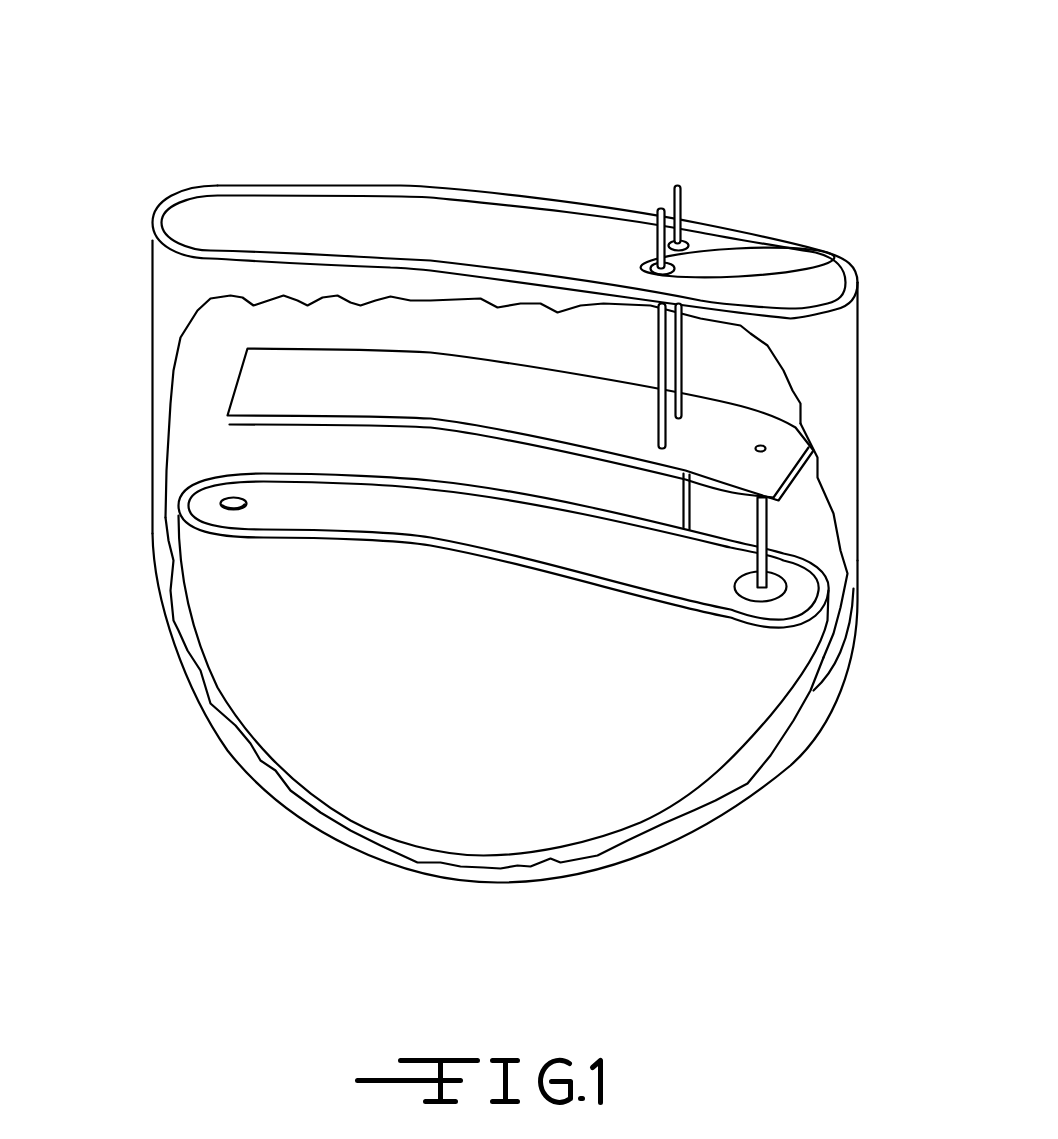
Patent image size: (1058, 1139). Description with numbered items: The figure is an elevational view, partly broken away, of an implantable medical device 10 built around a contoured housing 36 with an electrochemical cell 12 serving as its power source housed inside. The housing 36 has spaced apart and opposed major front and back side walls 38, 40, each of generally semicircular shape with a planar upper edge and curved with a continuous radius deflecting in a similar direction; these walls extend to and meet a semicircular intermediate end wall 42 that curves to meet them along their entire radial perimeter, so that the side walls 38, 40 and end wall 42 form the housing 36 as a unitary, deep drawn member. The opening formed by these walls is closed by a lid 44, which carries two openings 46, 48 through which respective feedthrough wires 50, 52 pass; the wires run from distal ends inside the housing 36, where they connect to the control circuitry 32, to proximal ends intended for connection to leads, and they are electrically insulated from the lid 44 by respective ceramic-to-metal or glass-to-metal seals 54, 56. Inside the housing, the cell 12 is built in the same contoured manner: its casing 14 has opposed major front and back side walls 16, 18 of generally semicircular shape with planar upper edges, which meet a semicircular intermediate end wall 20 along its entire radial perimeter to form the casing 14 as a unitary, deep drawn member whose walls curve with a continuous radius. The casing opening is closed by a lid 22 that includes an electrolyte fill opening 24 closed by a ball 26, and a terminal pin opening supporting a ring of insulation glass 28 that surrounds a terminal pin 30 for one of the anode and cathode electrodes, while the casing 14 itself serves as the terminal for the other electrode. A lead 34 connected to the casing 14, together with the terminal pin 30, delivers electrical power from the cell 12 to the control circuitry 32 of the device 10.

The implantable medical device 10 is at (837, 53).
The electrochemical cell 12 is at (822, 558).
The casing 14 is at (763, 697).
The front side wall 16 is at (710, 753).
The back side wall 18 is at (810, 512).
The intermediate end wall 20 is at (785, 660).
The lid 22 is at (427, 527).
The electrolyte fill opening 24 is at (247, 503).
The ball 26 is at (230, 512).
The ring of insulation glass 28 is at (663, 573).
The terminal pin 30 is at (772, 525).
The control circuitry 32 is at (393, 377).
The lead 34 is at (678, 497).
The housing 36 is at (162, 287).
The front side wall 38 is at (815, 345).
The back side wall 40 is at (530, 197).
The intermediate end wall 42 is at (840, 402).
The lid 44 is at (345, 200).
The opening 46 is at (688, 242).
The opening 48 is at (650, 268).
The feedthrough wire 50 is at (680, 185).
The feedthrough wire 52 is at (650, 247).
The seal 54 is at (783, 244).
The seal 56 is at (805, 258).